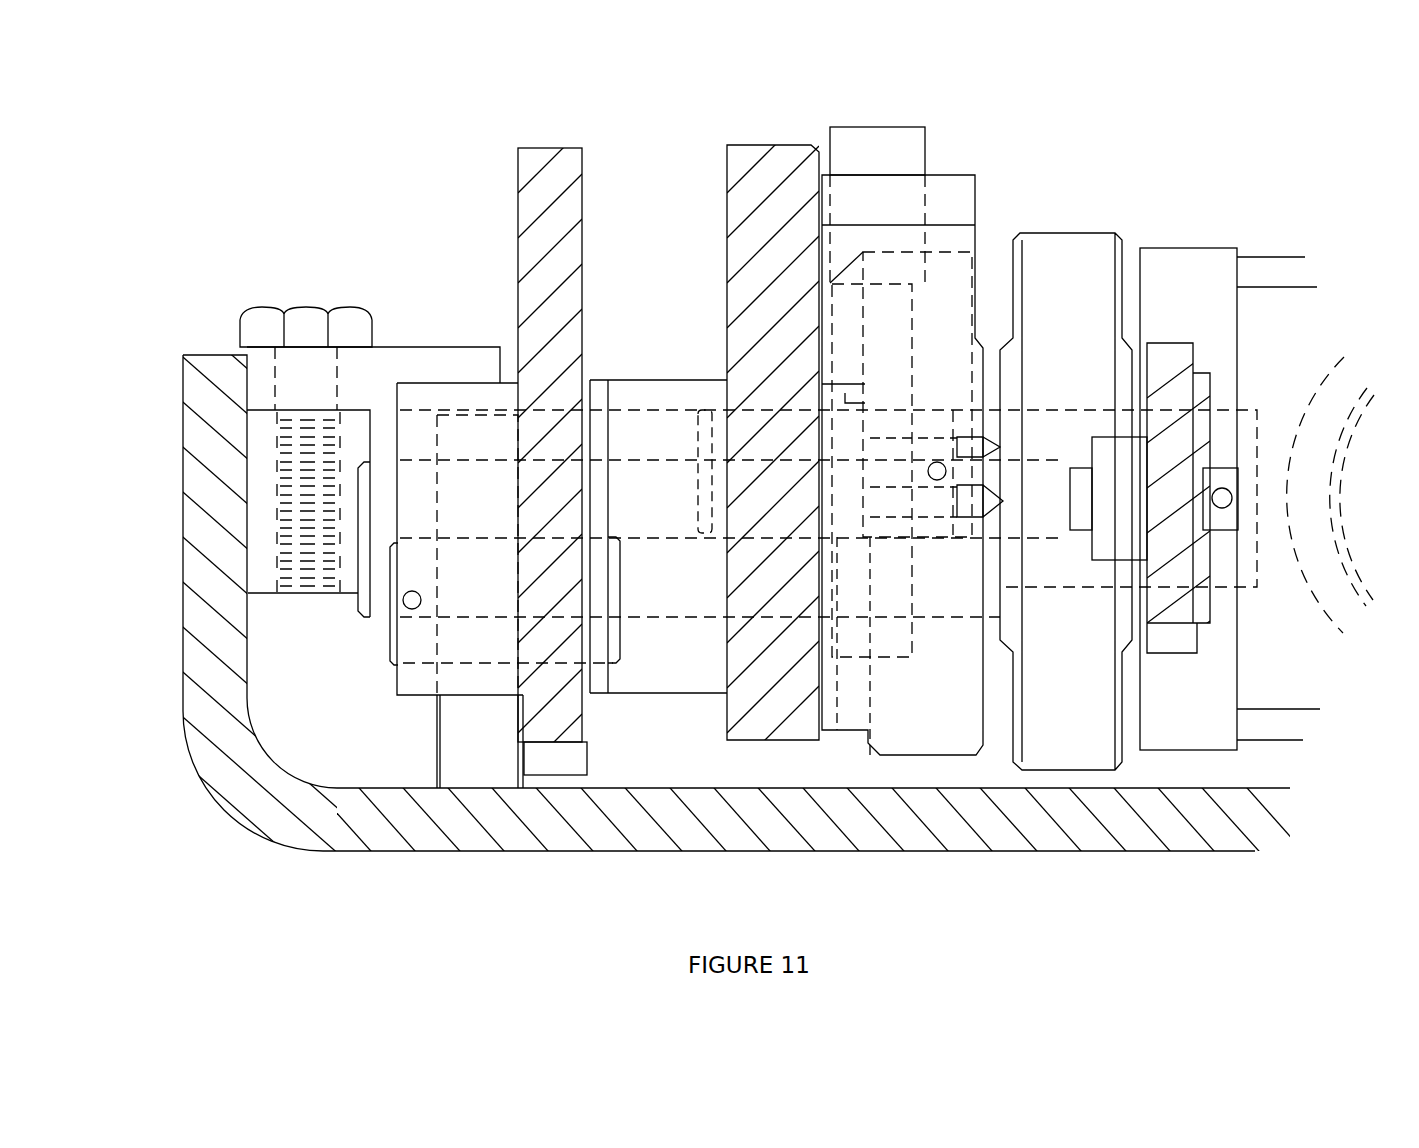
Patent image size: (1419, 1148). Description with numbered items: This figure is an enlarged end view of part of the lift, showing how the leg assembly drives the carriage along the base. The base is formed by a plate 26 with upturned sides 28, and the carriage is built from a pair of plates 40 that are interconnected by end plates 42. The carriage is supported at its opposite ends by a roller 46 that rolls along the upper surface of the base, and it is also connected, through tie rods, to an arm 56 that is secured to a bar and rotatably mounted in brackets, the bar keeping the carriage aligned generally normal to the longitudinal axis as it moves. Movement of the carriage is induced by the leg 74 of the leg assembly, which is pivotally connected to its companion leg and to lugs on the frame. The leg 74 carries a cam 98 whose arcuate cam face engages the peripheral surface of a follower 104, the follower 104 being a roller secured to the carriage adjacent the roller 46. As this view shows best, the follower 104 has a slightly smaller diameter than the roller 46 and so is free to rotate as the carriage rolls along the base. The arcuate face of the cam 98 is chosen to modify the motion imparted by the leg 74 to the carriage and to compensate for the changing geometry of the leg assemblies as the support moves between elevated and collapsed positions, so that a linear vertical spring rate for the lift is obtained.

The plate 26 is at (633, 832).
The upturned sides 28 is at (227, 680).
The plates 40 is at (1282, 273).
The end plates 42 is at (1197, 697).
The roller 46 is at (1082, 743).
The arm 56 is at (533, 177).
The leg 74 is at (750, 193).
The cam 98 is at (950, 198).
The follower 104 is at (923, 740).